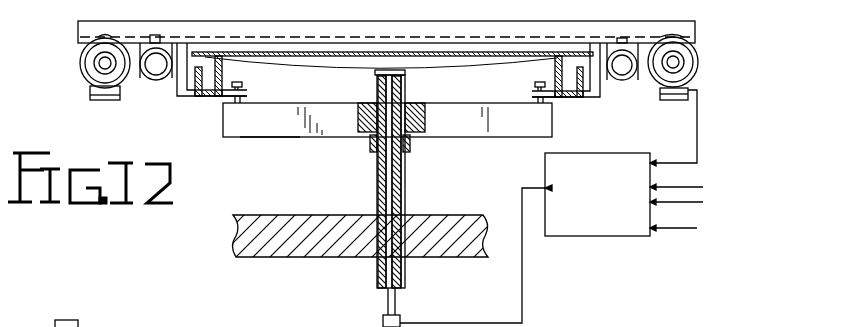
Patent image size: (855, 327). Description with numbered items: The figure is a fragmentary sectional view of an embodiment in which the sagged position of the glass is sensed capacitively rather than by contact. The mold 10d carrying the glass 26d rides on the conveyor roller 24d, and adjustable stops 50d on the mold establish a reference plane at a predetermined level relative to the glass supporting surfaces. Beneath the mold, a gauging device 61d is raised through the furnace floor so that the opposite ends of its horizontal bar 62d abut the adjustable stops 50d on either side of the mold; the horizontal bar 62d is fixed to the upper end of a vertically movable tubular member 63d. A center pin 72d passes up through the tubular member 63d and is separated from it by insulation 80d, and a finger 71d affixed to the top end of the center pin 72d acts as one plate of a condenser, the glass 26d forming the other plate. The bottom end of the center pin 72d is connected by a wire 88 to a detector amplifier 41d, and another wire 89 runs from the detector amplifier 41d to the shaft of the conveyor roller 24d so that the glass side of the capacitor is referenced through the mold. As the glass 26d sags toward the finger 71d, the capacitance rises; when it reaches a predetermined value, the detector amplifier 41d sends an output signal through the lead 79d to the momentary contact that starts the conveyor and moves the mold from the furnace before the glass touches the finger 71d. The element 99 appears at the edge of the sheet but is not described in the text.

The mold 10d is at (170, 102).
The conveyor roller 24d is at (699, 61).
The glass 26d is at (334, 55).
The detector amplifier 41d is at (594, 238).
The adjustable stop 50d is at (244, 85).
The gauging device 61d is at (222, 131).
The horizontal bar 62d is at (262, 138).
The tubular member 63d is at (378, 272).
The finger 71d is at (403, 72).
The center pin 72d is at (397, 305).
The lead 79d is at (668, 232).
The insulation 80d is at (405, 197).
The wire 88 is at (522, 293).
The wire 89 is at (698, 116).
The element 99 is at (104, 322).